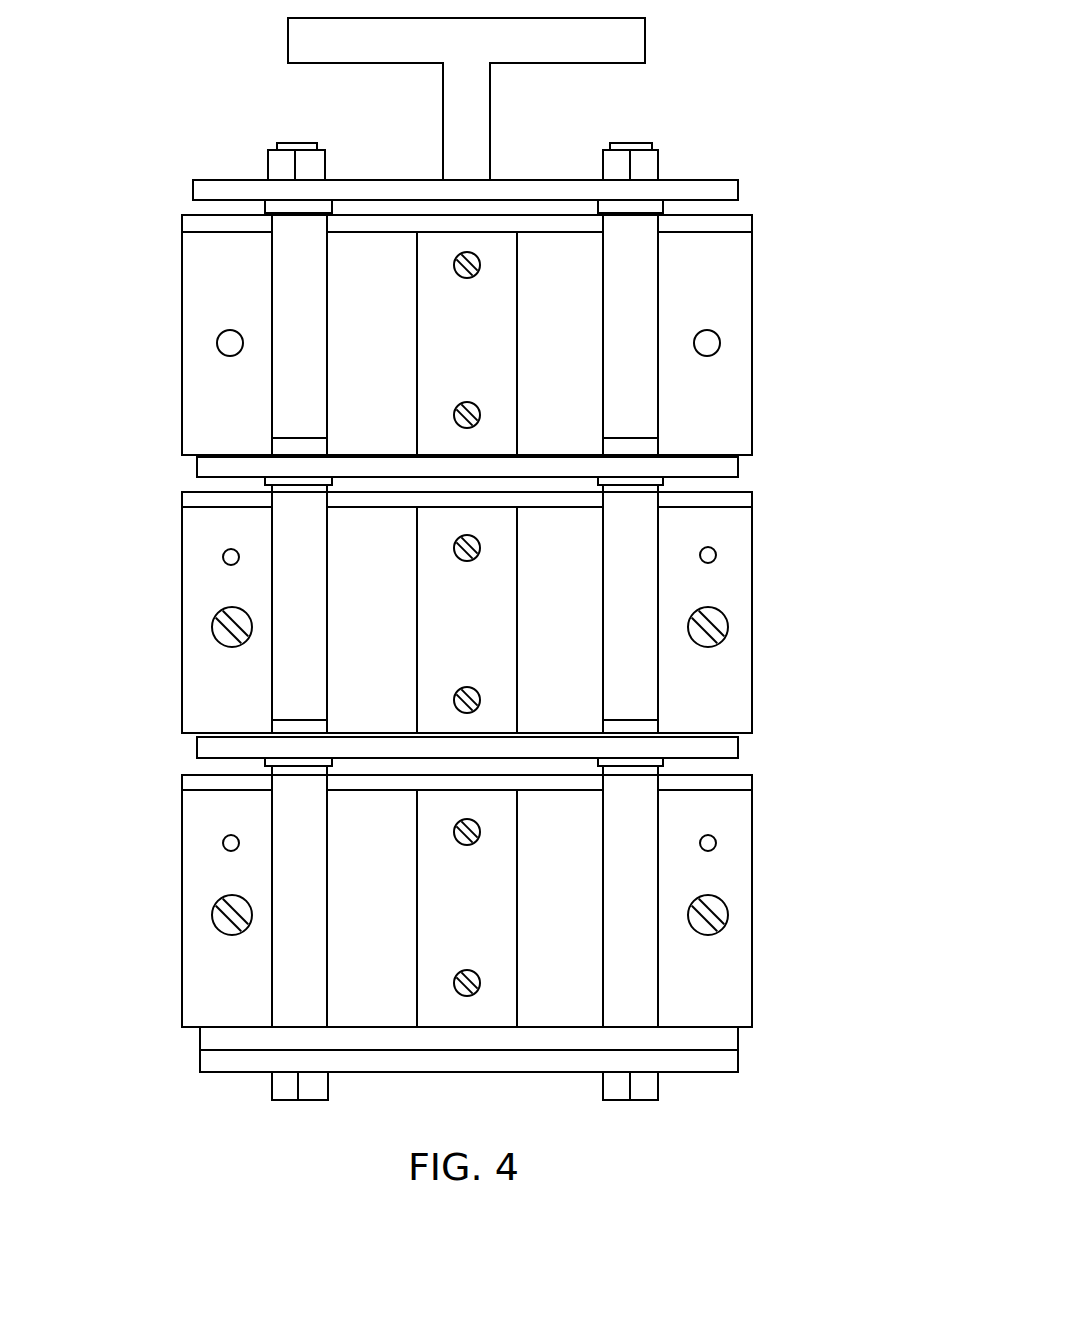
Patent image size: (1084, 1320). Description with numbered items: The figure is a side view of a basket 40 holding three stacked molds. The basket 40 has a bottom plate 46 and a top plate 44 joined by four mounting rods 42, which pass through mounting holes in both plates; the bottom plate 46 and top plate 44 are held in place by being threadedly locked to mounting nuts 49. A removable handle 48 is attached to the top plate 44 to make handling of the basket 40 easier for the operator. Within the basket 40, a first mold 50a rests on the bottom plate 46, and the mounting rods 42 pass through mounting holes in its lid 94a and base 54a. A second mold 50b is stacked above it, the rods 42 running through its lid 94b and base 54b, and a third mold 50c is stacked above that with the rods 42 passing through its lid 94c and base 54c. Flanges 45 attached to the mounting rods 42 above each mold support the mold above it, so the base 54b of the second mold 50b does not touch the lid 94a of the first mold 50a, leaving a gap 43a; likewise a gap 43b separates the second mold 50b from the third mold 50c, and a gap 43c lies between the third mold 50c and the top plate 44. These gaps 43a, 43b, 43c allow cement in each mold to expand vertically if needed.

The basket 40 is at (865, 483).
The mounting rods 42 is at (635, 312).
The gap 43a is at (583, 767).
The gap 43b is at (557, 485).
The gap 43c is at (485, 207).
The top plate 44 is at (725, 185).
The flanges 45 is at (265, 206).
The bottom plate 46 is at (728, 1060).
The removable handle 48 is at (630, 38).
The mounting nuts 49 is at (287, 150).
The first mold 50a is at (494, 897).
The second mold 50b is at (492, 609).
The third mold 50c is at (488, 275).
The base 54a is at (212, 1038).
The base 54b is at (212, 748).
The base 54c is at (210, 470).
The lid 94a is at (220, 784).
The lid 94b is at (220, 505).
The lid 94c is at (220, 227).